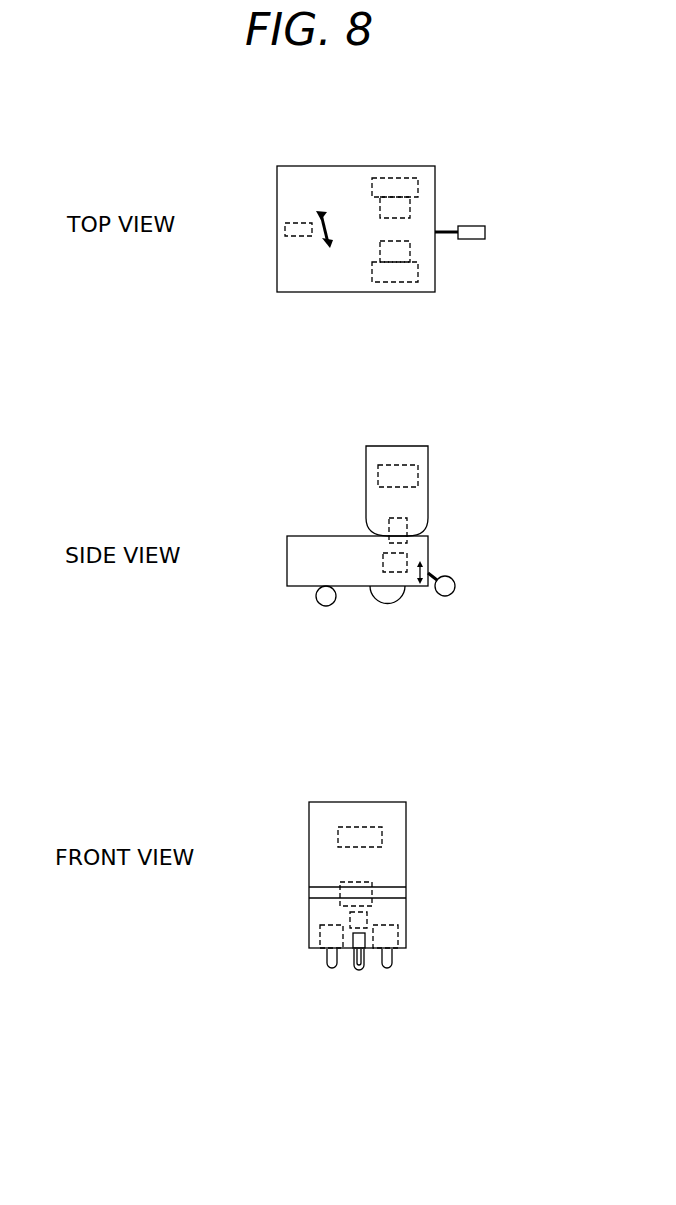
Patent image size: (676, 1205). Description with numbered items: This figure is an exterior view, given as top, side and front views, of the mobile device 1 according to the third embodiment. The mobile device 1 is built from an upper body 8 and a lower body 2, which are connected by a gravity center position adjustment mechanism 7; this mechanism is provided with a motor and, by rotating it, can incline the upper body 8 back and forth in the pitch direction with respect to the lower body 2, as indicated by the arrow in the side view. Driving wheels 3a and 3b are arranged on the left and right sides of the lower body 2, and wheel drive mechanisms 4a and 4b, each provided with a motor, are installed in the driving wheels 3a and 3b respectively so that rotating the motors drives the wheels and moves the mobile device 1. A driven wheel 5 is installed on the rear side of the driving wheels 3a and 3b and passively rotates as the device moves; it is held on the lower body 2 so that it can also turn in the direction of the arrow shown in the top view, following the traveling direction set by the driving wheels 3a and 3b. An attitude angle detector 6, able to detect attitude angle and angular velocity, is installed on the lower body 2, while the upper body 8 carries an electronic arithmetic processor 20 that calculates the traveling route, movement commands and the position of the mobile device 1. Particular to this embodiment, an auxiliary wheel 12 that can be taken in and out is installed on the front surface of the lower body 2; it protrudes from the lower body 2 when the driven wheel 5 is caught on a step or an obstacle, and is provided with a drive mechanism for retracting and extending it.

The mobile device 1 is at (255, 128).
The lower body 2 is at (337, 166).
The driving wheel 3a is at (418, 179).
The driving wheel 3b is at (418, 272).
The wheel drive mechanism 4a is at (410, 215).
The wheel drive mechanism 4b is at (410, 242).
The driven wheel 5 is at (285, 230).
The attitude angle detector 6 is at (408, 557).
The gravity center position adjustment mechanism 7 is at (408, 528).
The upper body 8 is at (366, 462).
The auxiliary wheel 12 is at (484, 227).
The electronic arithmetic processor 20 is at (418, 470).